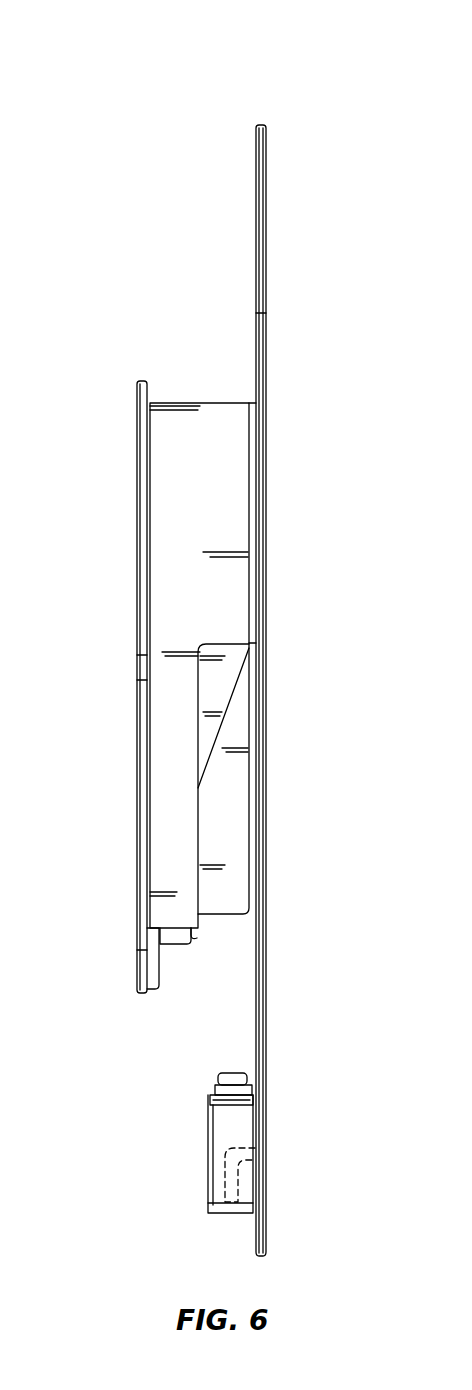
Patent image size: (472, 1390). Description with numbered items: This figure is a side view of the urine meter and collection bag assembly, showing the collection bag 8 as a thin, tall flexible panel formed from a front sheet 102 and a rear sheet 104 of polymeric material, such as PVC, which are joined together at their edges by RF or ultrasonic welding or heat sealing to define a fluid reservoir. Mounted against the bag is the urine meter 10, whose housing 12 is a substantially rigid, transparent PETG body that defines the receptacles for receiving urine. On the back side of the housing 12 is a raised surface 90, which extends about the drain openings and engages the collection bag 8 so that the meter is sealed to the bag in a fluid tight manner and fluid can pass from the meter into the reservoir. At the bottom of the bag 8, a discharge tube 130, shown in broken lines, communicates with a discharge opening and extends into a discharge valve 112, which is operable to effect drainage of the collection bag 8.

The collection bag 8 is at (263, 126).
The urine meter 10 is at (137, 384).
The housing 12 is at (188, 404).
The raised surface 90 is at (250, 413).
The front sheet 102 is at (267, 213).
The rear sheet 104 is at (256, 210).
The discharge valve 112 is at (207, 1163).
The discharge tube 130 is at (223, 1177).